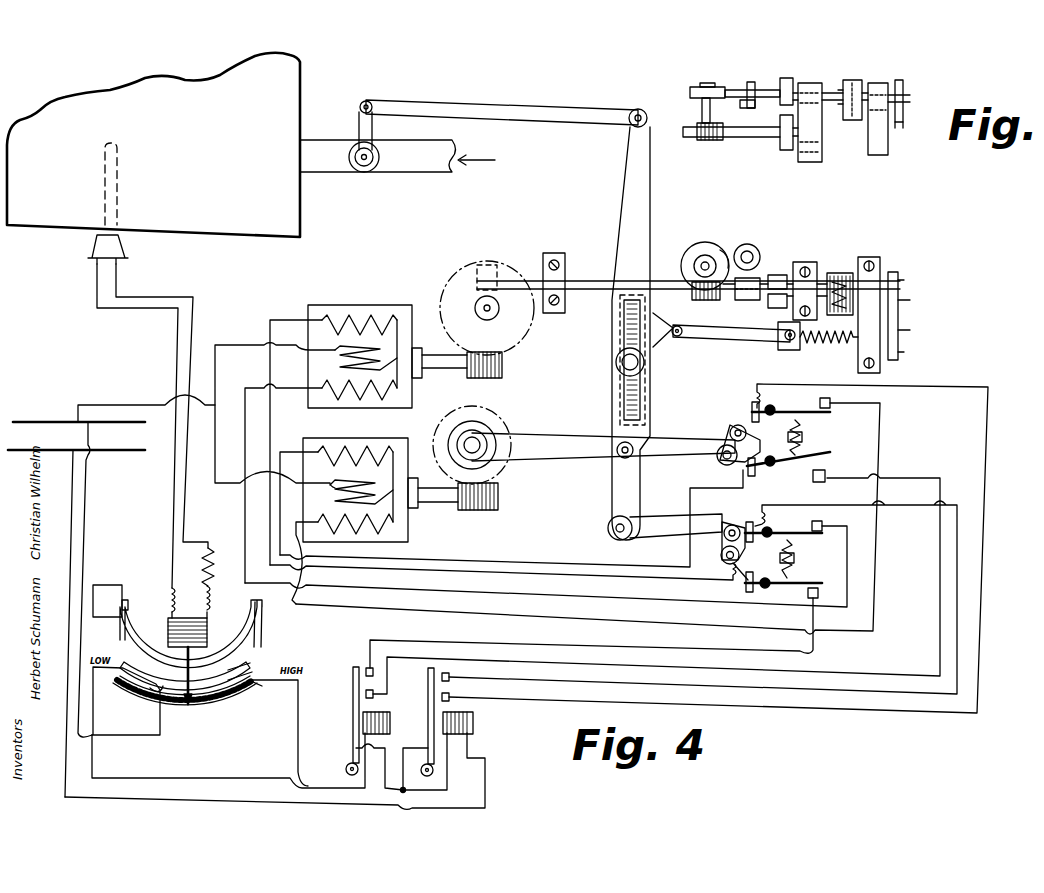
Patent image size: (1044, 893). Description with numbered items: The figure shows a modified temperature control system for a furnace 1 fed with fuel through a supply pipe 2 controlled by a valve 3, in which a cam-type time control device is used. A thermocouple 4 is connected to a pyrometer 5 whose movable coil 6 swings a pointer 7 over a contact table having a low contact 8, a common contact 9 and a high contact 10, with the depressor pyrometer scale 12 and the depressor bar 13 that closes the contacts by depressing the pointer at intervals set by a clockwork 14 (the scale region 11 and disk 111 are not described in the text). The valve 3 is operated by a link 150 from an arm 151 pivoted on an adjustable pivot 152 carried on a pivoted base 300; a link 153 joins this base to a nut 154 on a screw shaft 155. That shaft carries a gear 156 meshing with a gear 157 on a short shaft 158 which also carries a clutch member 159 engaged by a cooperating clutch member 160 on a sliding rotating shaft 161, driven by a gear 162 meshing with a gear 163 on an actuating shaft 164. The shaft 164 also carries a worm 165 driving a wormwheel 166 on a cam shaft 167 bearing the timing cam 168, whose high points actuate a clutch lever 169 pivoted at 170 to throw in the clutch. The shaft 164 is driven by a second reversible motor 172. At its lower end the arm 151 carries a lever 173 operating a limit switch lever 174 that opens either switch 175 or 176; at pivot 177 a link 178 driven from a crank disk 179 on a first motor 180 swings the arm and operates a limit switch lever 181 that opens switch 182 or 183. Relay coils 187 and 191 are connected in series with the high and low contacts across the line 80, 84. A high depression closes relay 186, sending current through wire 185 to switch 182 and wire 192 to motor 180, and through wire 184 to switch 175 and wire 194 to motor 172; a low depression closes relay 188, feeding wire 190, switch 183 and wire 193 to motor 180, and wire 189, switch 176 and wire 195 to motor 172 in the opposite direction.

In FIG. 4, the furnace 1 is at (153, 145).
In FIG. 4, the supply pipe 2 is at (397, 156).
In FIG. 4, the valve 3 is at (362, 172).
In FIG. 4, the thermocouple 4 is at (117, 195).
In FIG. 4, the pyrometer 5 is at (193, 583).
In FIG. 4, the movable coil 6 is at (207, 628).
In FIG. 4, the pointer 7 is at (192, 655).
In FIG. 4, the low contact 8 is at (140, 675).
In FIG. 4, the common contact 9 is at (158, 690).
In FIG. 4, the high contact 10 is at (237, 672).
In FIG. 4, the scale 11 is at (228, 692).
In FIG. 4, the depressor pyrometer scale 12 is at (267, 694).
In FIG. 4, the depressor bar 13 is at (252, 631).
In FIG. 4, the clockwork 14 is at (110, 601).
In FIG. 4, the line 80 is at (52, 452).
In FIG. 4, the line 84 is at (79, 410).
In FIG. 4, the disc 111 is at (487, 308).
In FIG. 4, the link 150 is at (506, 108).
In FIG. 4, the arm 151 is at (598, 497).
In FIG. 4, the adjustable pivot 152 is at (616, 364).
In FIG. 4, the link 153 is at (705, 333).
In FIG. 4, the nut 154 is at (782, 350).
In FIG. 4, the screw shaft 155 is at (830, 345).
In FIG. 4, the gear 156 is at (900, 352).
In FIG. 4, the gear 157 is at (900, 278).
In FIG. 5, the gear 157 is at (898, 125).
In FIG. 4, the short shaft 158 is at (910, 300).
In FIG. 5, the short shaft 158 is at (903, 100).
In FIG. 4, the clutch member 159 is at (850, 275).
In FIG. 5, the clutch member 159 is at (868, 135).
In FIG. 4, the clutch member 160 is at (838, 273).
In FIG. 5, the clutch member 160 is at (840, 110).
In FIG. 4, the sliding rotating shaft 161 is at (806, 262).
In FIG. 5, the sliding rotating shaft 161 is at (843, 85).
In FIG. 4, the gear 162 is at (780, 275).
In FIG. 5, the gear 162 is at (786, 78).
In FIG. 5, the gear 163 is at (786, 150).
In FIG. 4, the actuating shaft 164 is at (592, 280).
In FIG. 5, the actuating shaft 164 is at (748, 137).
In FIG. 4, the worm 165 is at (700, 300).
In FIG. 5, the worm 165 is at (700, 140).
In FIG. 4, the wormwheel 166 is at (690, 255).
In FIG. 4, the cam shaft 167 is at (705, 255).
In FIG. 5, the cam shaft 167 is at (702, 110).
In FIG. 4, the timing cam 168 is at (722, 250).
In FIG. 5, the timing cam 168 is at (690, 92).
In FIG. 4, the clutch lever 169 is at (745, 283).
In FIG. 5, the clutch lever 169 is at (750, 108).
In FIG. 4, the pivot 170 is at (750, 248).
In FIG. 5, the pivot 170 is at (748, 82).
In FIG. 4, the second reversible motor 172 is at (405, 347).
In FIG. 4, the lever 173 is at (665, 527).
In FIG. 4, the limit switch lever 174 is at (730, 527).
In FIG. 4, the limit switch 175 is at (783, 527).
In FIG. 4, the limit switch 176 is at (783, 571).
In FIG. 4, the pivot 177 is at (616, 448).
In FIG. 4, the link 178 is at (603, 447).
In FIG. 4, the crank disk 179 is at (485, 428).
In FIG. 4, the first motor 180 is at (400, 481).
In FIG. 4, the limit switch lever 181 is at (728, 445).
In FIG. 4, the limit switch 182 is at (791, 406).
In FIG. 4, the limit switch 183 is at (788, 451).
In FIG. 4, the wire 184 is at (945, 614).
In FIG. 4, the wire 185 is at (718, 541).
In FIG. 4, the relay 186 is at (462, 687).
In FIG. 4, the coil 187 is at (473, 724).
In FIG. 4, the relay 188 is at (345, 721).
In FIG. 4, the wire 189 is at (591, 633).
In FIG. 4, the wire 190 is at (656, 578).
In FIG. 4, the coil 191 is at (386, 722).
In FIG. 4, the wire 192 is at (897, 404).
In FIG. 4, the wire 193 is at (509, 560).
In FIG. 4, the wire 194 is at (546, 566).
In FIG. 4, the wire 195 is at (268, 417).
In FIG. 4, the pivoted base 300 is at (612, 318).